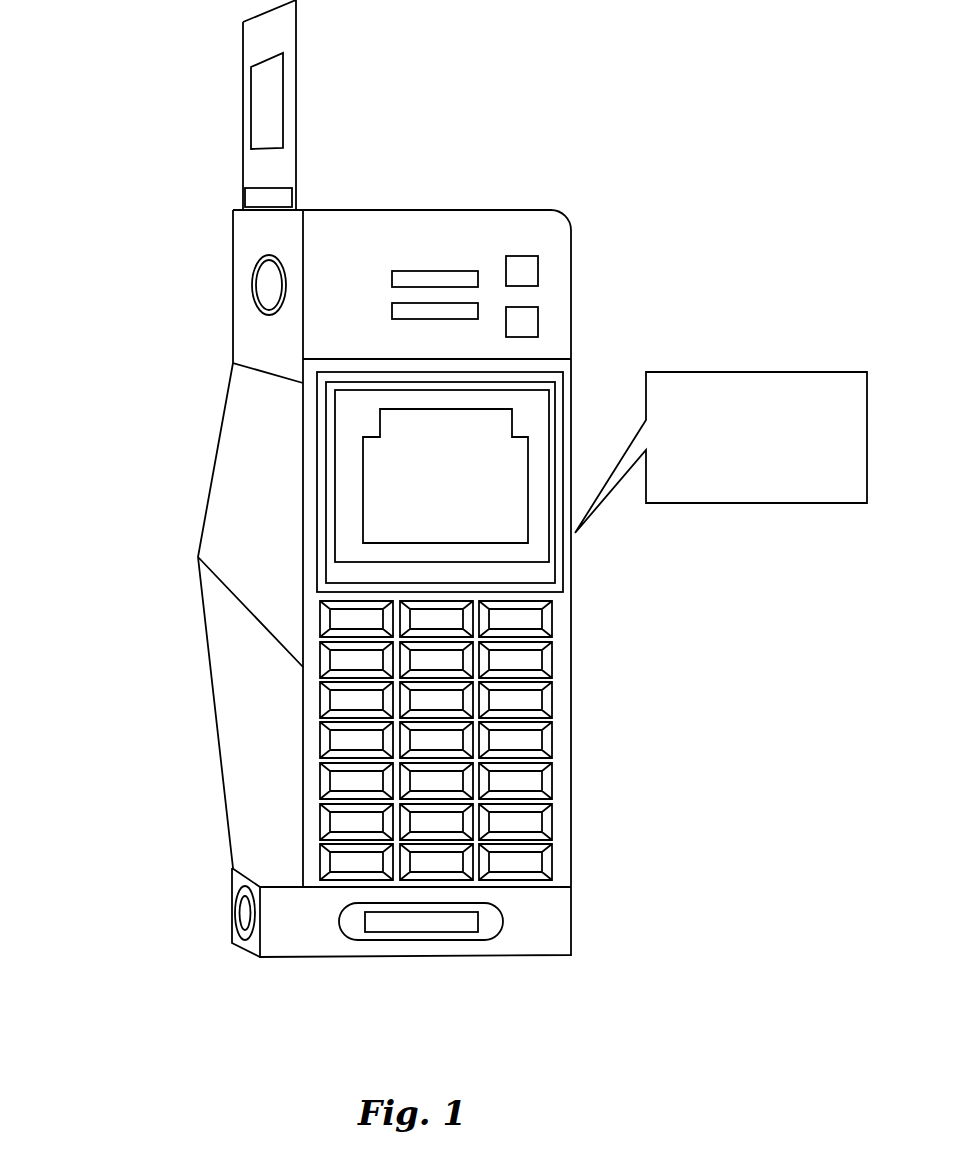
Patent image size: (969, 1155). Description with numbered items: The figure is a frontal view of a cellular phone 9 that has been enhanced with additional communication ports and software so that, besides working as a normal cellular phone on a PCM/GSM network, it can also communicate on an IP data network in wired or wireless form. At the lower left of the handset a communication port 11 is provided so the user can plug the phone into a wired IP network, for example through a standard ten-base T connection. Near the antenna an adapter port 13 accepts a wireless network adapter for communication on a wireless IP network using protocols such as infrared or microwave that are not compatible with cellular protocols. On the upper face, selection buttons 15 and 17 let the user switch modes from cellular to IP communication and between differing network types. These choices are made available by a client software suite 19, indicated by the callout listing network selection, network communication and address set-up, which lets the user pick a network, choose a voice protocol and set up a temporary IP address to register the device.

The cellular phone 9 is at (463, 150).
The communication port 11 is at (243, 927).
The adapter port 13 is at (260, 287).
The selection button 15 is at (538, 277).
The selection button 17 is at (538, 323).
The client software suite 19 is at (751, 504).